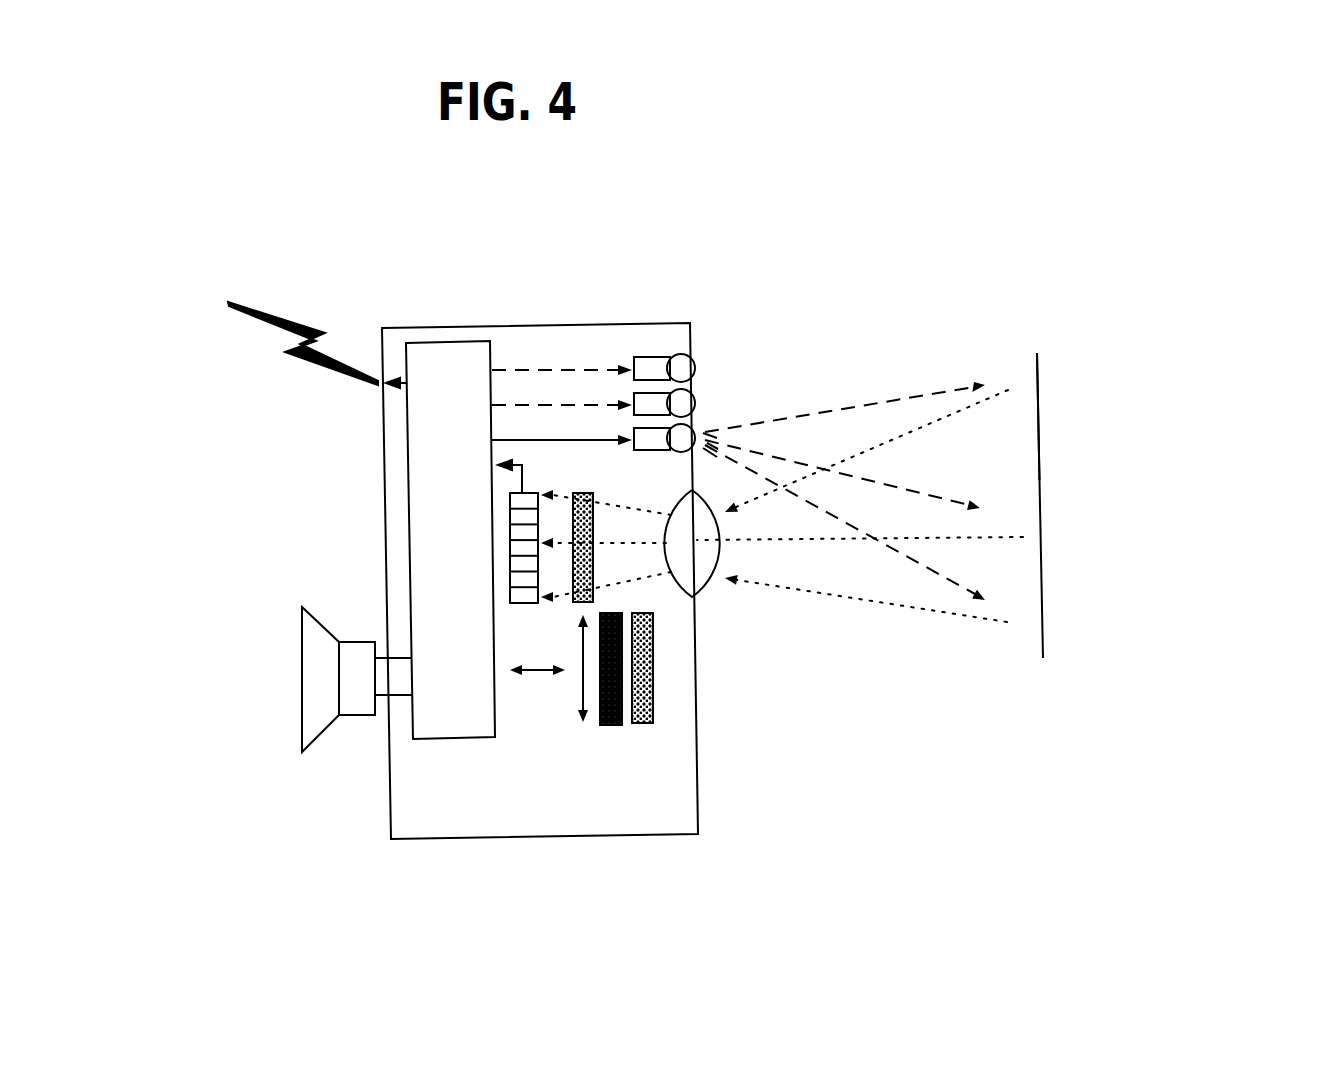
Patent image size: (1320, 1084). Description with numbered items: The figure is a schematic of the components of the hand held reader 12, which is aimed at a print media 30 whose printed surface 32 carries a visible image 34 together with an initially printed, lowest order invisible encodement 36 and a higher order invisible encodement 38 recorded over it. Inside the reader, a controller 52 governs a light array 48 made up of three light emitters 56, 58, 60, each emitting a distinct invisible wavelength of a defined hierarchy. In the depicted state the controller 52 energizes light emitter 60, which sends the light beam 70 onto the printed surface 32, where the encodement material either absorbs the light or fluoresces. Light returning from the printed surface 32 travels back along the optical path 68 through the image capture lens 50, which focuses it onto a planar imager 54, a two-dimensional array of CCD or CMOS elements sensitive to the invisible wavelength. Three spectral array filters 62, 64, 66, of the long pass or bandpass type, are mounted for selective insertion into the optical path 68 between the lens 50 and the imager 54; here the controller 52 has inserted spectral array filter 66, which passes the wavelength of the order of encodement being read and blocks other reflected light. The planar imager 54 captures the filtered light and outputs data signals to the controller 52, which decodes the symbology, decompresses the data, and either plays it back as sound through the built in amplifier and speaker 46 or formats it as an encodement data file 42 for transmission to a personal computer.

The hand held reader 12 is at (370, 468).
The print media 30 is at (1041, 507).
The printed surface 32 is at (1152, 377).
The visible image 34 is at (1152, 377).
The invisible encodement 36 is at (1152, 377).
The higher order encodement 38 is at (1037, 405).
The encodement data file 42 is at (294, 337).
The speaker 46 is at (288, 698).
The light array 48 is at (701, 320).
The image capture lens 50 is at (710, 597).
The controller 52 is at (408, 543).
The planar imager 54 is at (537, 477).
The light emitter 56 is at (703, 360).
The light emitter 58 is at (703, 390).
The light emitter 60 is at (707, 428).
The spectral array filter 62 is at (657, 665).
The spectral array filter 64 is at (613, 730).
The spectral array filter 66 is at (568, 613).
The optical path 68 is at (957, 552).
The light beam 70 is at (923, 382).